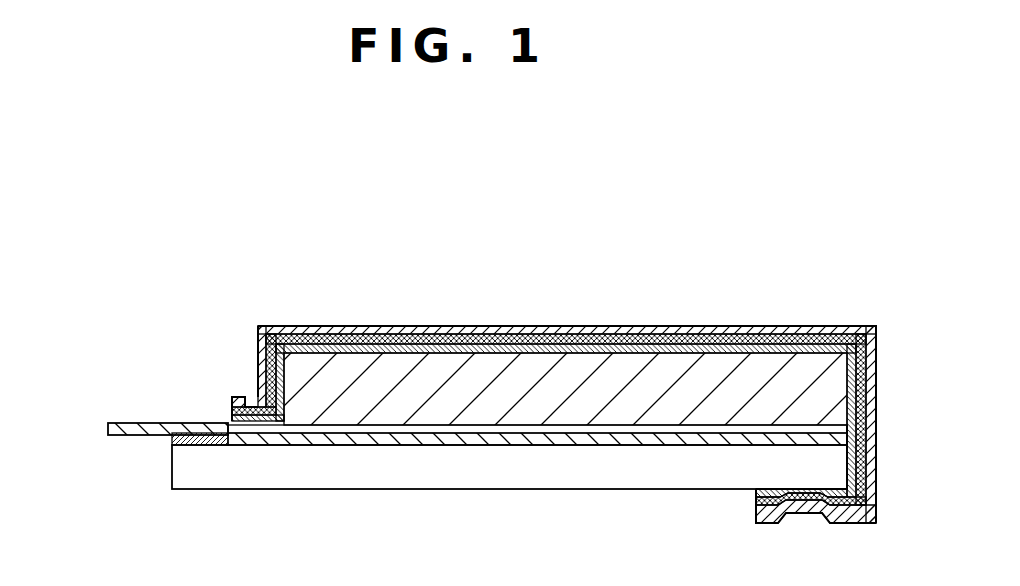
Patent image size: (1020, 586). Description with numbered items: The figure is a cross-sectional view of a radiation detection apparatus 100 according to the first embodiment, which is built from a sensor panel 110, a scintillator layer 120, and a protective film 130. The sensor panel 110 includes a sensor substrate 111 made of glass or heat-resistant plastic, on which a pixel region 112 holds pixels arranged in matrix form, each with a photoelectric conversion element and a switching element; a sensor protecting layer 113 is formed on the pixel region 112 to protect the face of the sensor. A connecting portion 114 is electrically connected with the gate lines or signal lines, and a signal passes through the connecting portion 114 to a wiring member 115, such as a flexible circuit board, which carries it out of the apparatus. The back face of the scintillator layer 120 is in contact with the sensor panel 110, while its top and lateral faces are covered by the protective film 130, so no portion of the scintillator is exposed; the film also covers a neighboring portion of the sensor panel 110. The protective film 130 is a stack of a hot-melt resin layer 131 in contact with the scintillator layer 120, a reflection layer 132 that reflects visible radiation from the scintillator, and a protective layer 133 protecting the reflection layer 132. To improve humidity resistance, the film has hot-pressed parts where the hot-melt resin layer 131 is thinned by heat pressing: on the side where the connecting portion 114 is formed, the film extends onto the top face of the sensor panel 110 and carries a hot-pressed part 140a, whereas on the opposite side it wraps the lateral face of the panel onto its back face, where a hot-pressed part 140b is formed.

The radiation detection apparatus 100 is at (806, 270).
The sensor panel 110 is at (85, 420).
The sensor substrate 111 is at (383, 470).
The pixel region 112 is at (500, 440).
The sensor protecting layer 113 is at (588, 428).
The connecting portion 114 is at (197, 447).
The wiring member 115 is at (143, 430).
The scintillator layer 120 is at (356, 365).
The protective film 130 is at (602, 263).
The hot-melt resin layer 131 is at (457, 333).
The reflection layer 132 is at (528, 341).
The protective layer 133 is at (591, 349).
The hot-pressed part 140a is at (240, 380).
The hot-pressed part 140b is at (832, 533).